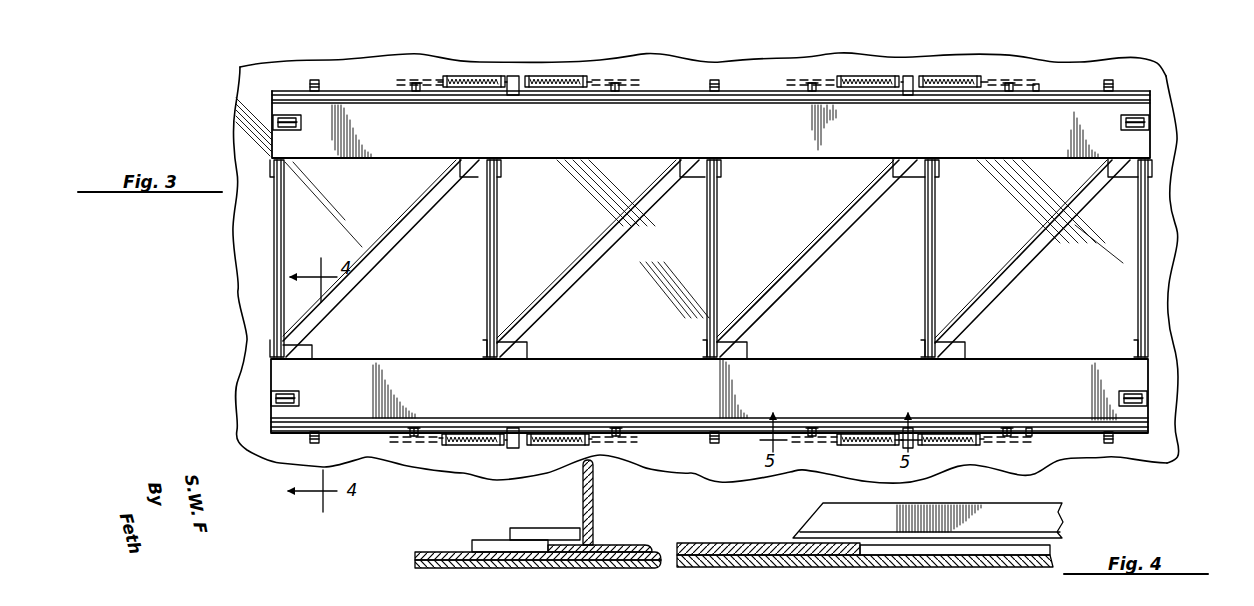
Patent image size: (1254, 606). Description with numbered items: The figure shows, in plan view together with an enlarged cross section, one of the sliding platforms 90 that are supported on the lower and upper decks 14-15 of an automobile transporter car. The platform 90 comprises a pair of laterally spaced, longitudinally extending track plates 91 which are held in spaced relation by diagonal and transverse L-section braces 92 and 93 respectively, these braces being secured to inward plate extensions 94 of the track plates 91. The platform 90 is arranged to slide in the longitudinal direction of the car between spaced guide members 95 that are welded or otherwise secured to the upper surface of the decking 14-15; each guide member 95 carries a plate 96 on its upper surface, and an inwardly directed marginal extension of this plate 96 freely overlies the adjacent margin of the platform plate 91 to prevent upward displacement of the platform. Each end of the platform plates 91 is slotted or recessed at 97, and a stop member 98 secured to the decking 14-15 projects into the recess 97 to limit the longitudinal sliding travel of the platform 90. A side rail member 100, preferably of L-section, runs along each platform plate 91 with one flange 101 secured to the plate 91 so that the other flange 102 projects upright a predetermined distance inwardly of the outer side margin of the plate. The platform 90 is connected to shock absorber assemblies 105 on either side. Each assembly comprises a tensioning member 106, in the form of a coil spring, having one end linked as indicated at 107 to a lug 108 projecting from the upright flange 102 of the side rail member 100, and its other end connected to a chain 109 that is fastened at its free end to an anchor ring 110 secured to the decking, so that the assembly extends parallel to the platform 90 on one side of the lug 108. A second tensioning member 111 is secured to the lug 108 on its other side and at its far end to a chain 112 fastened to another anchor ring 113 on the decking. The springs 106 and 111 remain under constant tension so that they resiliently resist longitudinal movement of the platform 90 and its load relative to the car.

In FIG. 3, the sliding platform 90 is at (1155, 210).
In FIG. 3, the track plate 91 is at (808, 158).
In FIG. 4, the track plate 91 is at (722, 542).
In FIG. 3, the diagonal L-section brace 92 is at (498, 236).
In FIG. 3, the transverse L-section brace 93 is at (402, 246).
In FIG. 4, the transverse L-section brace 93 is at (1050, 515).
In FIG. 3, the inward plate extension 94 is at (478, 178).
In FIG. 3, the guide member 95 is at (318, 80).
In FIG. 4, the guide member 95 is at (490, 540).
In FIG. 3, the plate 96 is at (322, 89).
In FIG. 4, the plate 96 is at (545, 528).
In FIG. 3, the recess 97 is at (292, 124).
In FIG. 3, the stop member 98 is at (275, 122).
In FIG. 3, the side rail member 100 is at (649, 104).
In FIG. 4, the side rail member 100 is at (600, 509).
In FIG. 3, the flange 101 is at (690, 104).
In FIG. 4, the flange 101 is at (612, 543).
In FIG. 3, the flange 102 is at (663, 91).
In FIG. 3, the shock absorber assembly 105 is at (490, 75).
In FIG. 3, the tensioning member 106 is at (840, 94).
In FIG. 3, the link 107 is at (905, 77).
In FIG. 3, the lug 108 is at (913, 79).
In FIG. 3, the chain 109 is at (822, 81).
In FIG. 3, the anchor ring 110 is at (790, 88).
In FIG. 3, the second tensioning member 111 is at (953, 89).
In FIG. 3, the chain 112 is at (1004, 82).
In FIG. 3, the anchor ring 113 is at (1036, 88).
In FIG. 3, the lower and upper decks 14-15 is at (1170, 314).
In FIG. 4, the lower and upper decks 14-15 is at (895, 566).